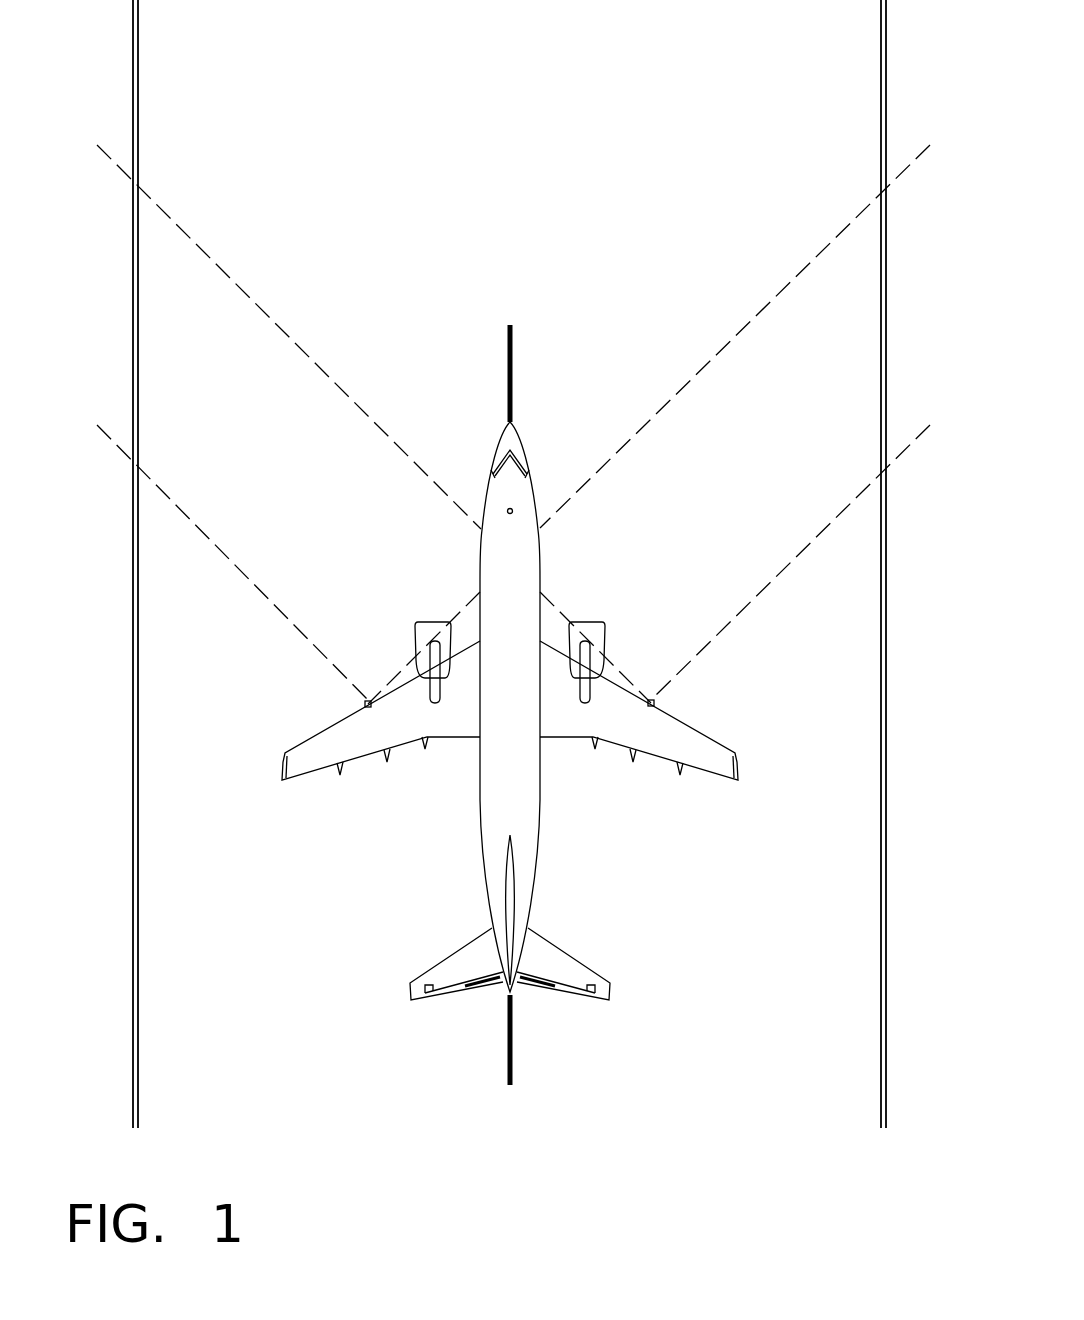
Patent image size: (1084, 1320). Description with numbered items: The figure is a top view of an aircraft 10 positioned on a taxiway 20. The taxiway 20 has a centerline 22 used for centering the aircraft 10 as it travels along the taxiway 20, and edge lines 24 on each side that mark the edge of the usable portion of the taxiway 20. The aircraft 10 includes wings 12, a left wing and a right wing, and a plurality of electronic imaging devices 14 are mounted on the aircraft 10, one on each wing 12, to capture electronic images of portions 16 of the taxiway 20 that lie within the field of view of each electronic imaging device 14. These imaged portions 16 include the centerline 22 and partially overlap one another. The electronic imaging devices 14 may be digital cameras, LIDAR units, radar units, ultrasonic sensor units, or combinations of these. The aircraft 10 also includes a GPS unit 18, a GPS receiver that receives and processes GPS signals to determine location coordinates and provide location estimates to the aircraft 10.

The aircraft 10 is at (497, 557).
The wings 12 is at (347, 729).
The electronic imaging devices 14 is at (372, 705).
The portions of the taxiway 16 is at (299, 630).
The GPS unit 18 is at (513, 508).
The taxiway 20 is at (630, 74).
The centerline 22 is at (513, 360).
The edge lines 24 is at (139, 110).